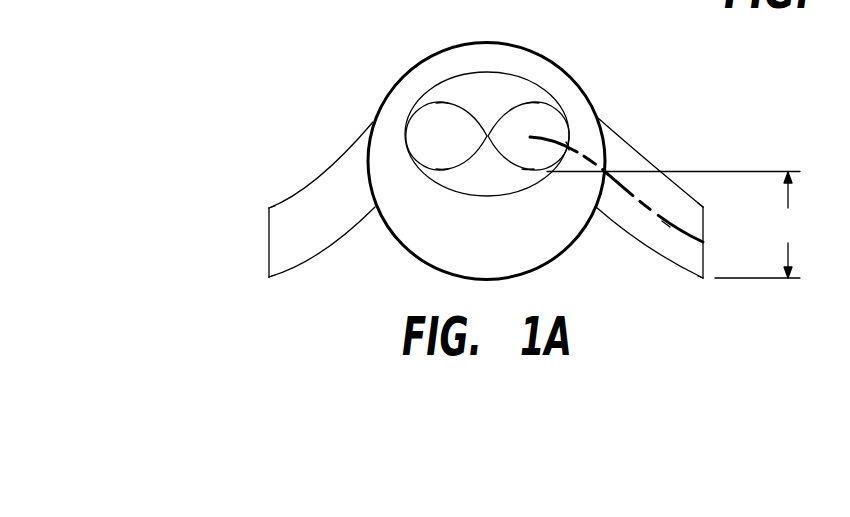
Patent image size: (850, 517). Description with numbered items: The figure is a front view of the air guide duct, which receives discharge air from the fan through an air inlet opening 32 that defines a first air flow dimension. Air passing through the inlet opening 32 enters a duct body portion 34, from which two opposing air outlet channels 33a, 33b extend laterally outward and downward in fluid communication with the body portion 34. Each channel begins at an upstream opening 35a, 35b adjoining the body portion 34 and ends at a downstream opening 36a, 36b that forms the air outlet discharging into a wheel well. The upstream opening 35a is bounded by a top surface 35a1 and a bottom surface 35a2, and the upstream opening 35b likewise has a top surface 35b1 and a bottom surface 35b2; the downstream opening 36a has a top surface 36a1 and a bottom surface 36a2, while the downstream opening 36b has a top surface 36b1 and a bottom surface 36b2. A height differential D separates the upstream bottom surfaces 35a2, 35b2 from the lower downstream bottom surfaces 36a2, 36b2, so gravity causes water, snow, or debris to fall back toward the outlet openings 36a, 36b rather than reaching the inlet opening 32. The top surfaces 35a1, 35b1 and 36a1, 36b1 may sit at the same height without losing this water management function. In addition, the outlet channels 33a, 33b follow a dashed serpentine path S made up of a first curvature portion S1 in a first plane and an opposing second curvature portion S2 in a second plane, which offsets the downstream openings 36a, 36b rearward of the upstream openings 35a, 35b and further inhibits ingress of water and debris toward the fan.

The air inlet opening 32 is at (527, 44).
The duct body portion 34 is at (527, 242).
The upstream opening 35a is at (460, 152).
The top surface 35a1 is at (441, 103).
The bottom surface 35a2 is at (440, 170).
The upstream opening 35b is at (548, 135).
The top surface 35b1 is at (537, 101).
The bottom surface 35b2 is at (528, 170).
The air outlet channel 33a is at (308, 177).
The downstream opening 36a is at (269, 234).
The top surface 36a1 is at (269, 207).
The bottom surface 36a2 is at (269, 277).
The air outlet channel 33b is at (653, 165).
The downstream opening 36b is at (703, 230).
The top surface 36b1 is at (704, 208).
The bottom surface 36b2 is at (703, 279).
The height differential D is at (673, 225).
The suture path S is at (628, 197).
The first curvature portion S1 is at (570, 150).
The second curvature portion S2 is at (667, 231).